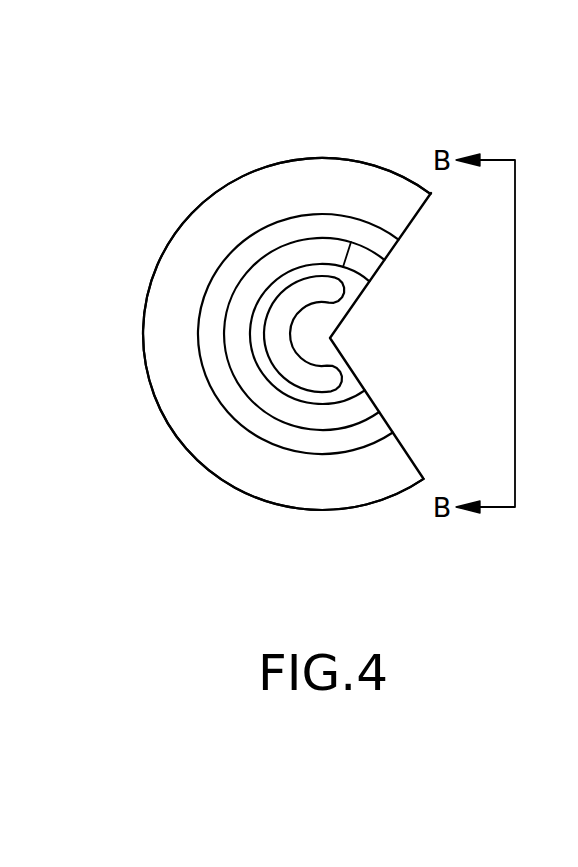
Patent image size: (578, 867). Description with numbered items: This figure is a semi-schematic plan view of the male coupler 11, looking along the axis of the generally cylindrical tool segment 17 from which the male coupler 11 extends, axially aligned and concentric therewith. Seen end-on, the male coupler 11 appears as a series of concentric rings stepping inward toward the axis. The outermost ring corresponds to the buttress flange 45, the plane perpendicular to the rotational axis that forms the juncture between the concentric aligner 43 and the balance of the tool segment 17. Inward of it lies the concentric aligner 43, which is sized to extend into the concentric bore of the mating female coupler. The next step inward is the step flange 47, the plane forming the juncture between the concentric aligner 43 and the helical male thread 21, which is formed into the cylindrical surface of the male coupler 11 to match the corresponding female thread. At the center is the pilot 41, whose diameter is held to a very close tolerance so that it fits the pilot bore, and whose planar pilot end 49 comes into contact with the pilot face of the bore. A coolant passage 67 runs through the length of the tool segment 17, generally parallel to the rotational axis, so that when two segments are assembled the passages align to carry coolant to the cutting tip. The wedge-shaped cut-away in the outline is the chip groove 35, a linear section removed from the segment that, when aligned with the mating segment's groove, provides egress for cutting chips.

The male coupler 11 is at (320, 204).
The tool segment 17 is at (255, 140).
The male thread 21 is at (288, 233).
The chip groove 35 is at (372, 317).
The pilot 41 is at (352, 241).
The concentric aligner 43 is at (232, 252).
The buttress flange 45 is at (172, 254).
The step flange 47 is at (309, 233).
The pilot end 49 is at (348, 385).
The coolant passage 67 is at (323, 378).